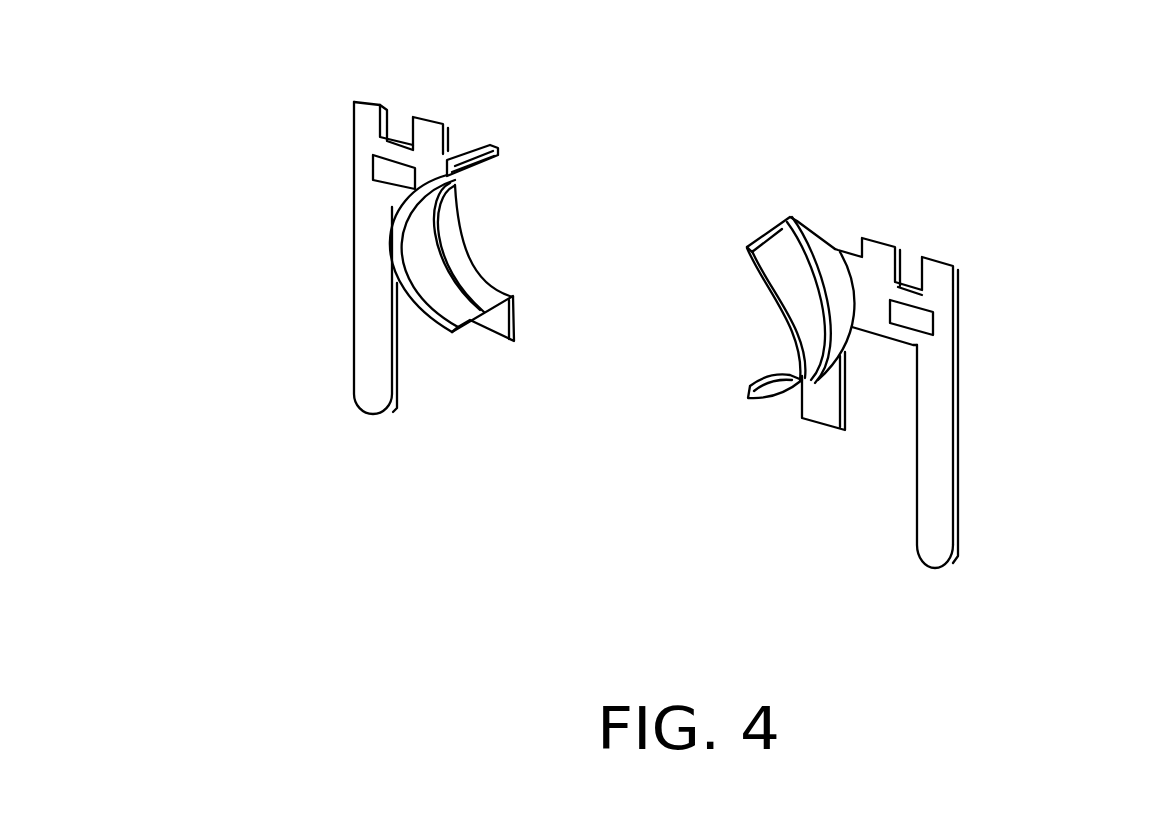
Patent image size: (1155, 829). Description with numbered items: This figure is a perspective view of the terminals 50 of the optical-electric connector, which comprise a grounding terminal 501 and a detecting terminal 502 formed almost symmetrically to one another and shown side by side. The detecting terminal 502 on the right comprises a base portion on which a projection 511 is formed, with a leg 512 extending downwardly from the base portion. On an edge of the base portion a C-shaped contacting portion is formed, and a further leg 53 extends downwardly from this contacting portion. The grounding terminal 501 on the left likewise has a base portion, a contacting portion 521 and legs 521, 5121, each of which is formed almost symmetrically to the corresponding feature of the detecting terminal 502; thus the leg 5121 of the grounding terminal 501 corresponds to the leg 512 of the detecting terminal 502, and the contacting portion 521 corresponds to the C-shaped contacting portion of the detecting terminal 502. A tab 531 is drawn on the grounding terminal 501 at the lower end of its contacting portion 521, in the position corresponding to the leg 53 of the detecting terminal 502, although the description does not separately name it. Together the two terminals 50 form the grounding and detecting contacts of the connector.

The terminals 50 is at (908, 165).
The grounding terminal 501 is at (350, 68).
The detecting terminal 502 is at (913, 203).
The projection 511 is at (913, 317).
The leg 512 is at (930, 508).
The leg 5121 is at (372, 368).
The contacting portion 521 is at (455, 300).
The tab of first contact piece 531 is at (500, 325).
The leg 53 is at (818, 408).